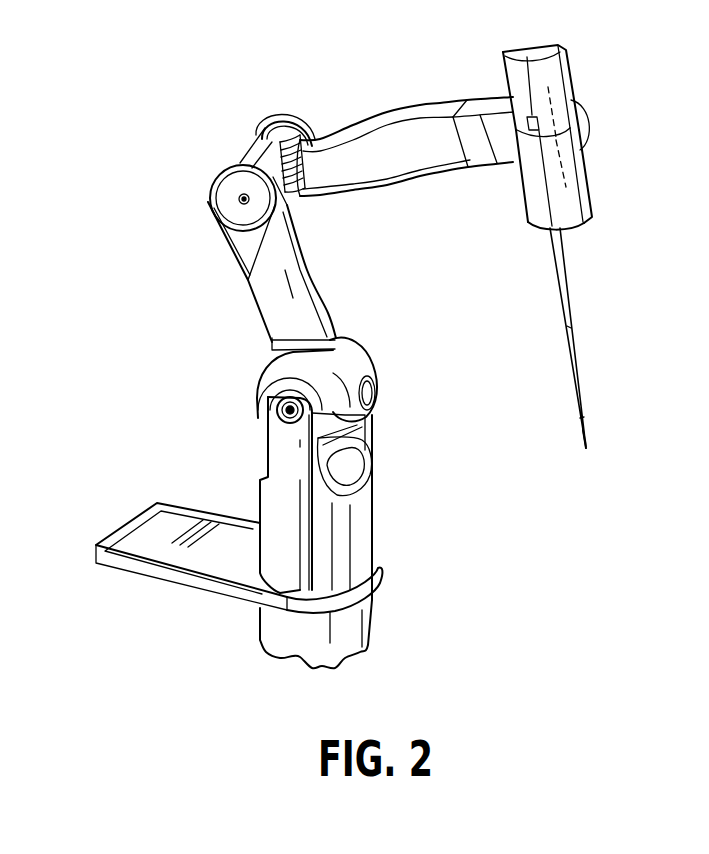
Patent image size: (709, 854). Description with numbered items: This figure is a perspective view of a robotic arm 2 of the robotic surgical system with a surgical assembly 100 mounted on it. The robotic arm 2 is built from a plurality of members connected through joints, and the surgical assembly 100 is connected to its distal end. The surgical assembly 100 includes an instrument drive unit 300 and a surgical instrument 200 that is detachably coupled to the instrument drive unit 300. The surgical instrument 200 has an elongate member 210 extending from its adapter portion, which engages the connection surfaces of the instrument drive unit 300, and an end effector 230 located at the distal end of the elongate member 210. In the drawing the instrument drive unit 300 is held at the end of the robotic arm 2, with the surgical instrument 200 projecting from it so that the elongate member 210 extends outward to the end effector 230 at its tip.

The robotic arm 2 is at (210, 311).
The surgical assembly 100 is at (603, 152).
The surgical instrument 200 is at (530, 187).
The elongate member 210 is at (573, 328).
The end effector 230 is at (590, 433).
The instrument drive unit 300 is at (547, 73).